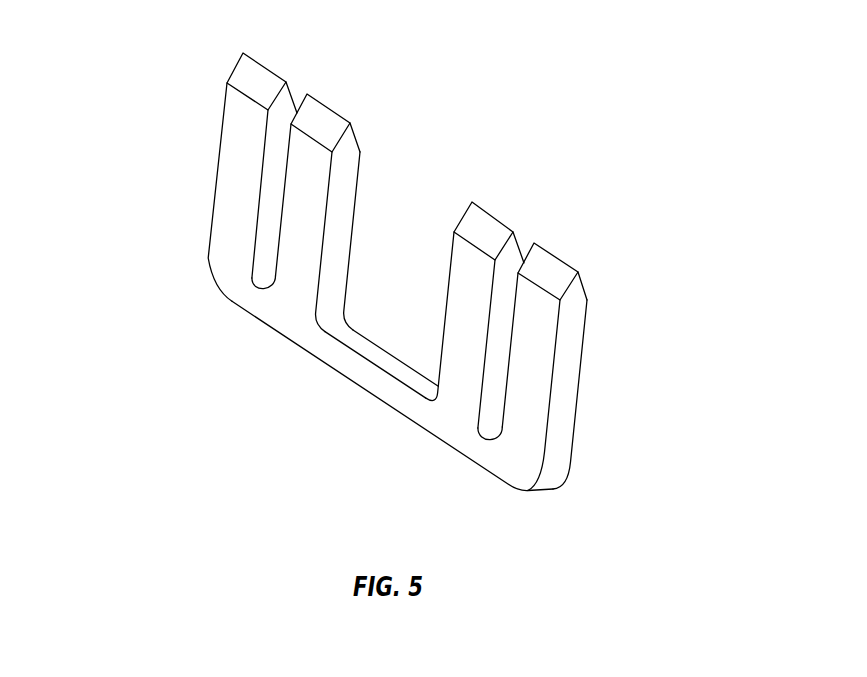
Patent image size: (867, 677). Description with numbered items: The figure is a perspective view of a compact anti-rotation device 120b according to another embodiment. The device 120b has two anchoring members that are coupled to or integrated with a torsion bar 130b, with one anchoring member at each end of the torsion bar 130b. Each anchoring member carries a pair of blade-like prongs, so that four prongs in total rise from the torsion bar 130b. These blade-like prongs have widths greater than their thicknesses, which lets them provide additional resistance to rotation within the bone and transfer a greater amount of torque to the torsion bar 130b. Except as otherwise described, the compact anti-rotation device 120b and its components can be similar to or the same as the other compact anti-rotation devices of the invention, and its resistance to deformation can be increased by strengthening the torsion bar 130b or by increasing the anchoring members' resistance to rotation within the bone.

The compact anti-rotation device 120b is at (376, 260).
The torsion bar 130b is at (362, 372).